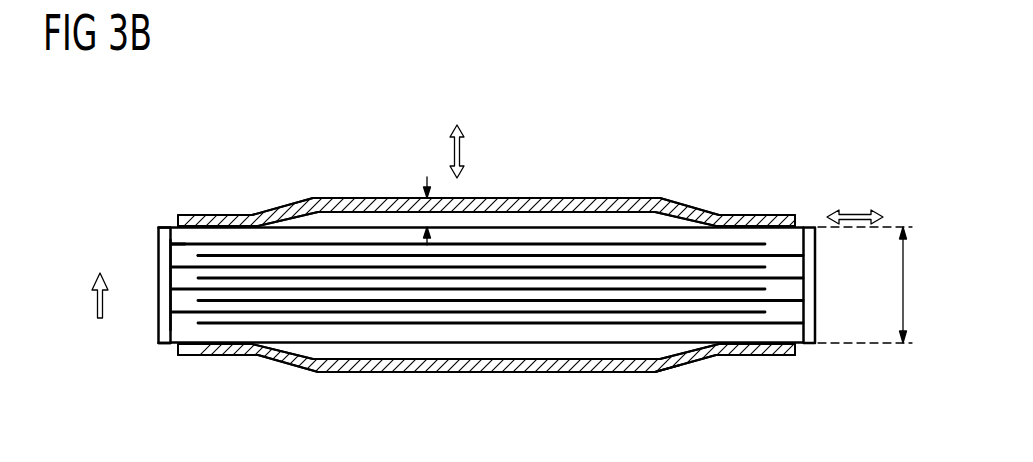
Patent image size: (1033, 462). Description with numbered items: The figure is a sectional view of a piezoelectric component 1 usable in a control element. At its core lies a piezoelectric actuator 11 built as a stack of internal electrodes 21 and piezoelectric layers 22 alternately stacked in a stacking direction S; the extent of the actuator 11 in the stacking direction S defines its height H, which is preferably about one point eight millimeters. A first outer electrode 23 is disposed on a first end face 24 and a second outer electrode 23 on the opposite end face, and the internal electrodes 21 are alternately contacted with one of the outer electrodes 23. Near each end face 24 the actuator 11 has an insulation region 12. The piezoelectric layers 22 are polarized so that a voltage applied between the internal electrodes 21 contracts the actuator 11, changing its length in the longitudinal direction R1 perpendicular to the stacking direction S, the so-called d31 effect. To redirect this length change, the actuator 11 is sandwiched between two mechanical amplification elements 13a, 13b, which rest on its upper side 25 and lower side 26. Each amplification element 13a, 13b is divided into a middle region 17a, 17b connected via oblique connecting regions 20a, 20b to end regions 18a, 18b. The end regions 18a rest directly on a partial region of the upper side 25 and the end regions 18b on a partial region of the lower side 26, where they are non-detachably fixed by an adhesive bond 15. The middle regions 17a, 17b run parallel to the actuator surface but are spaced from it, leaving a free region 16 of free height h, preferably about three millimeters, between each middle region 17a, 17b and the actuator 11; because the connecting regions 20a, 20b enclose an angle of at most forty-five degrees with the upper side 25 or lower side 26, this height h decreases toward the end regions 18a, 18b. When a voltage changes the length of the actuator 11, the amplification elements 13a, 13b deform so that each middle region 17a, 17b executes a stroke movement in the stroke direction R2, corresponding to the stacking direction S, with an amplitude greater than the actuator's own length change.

The piezoelectric component 1 is at (785, 97).
The piezoelectric actuator 11 is at (572, 227).
The insulation region 12 is at (800, 228).
The first amplification element 13a is at (502, 188).
The second amplification element 13b is at (475, 384).
The adhesive bond 15 is at (230, 356).
The free region 16 is at (662, 373).
The middle region of first amplification element 17a is at (610, 197).
The middle region of second amplification element 17b is at (610, 373).
The end region of first amplification element 18a is at (230, 215).
The end region of second amplification element 18b is at (203, 356).
The connecting region of first amplification element 20a is at (287, 205).
The connecting region of second amplification element 20b is at (280, 364).
The internal electrode 21 is at (227, 253).
The piezoelectric layer 22 is at (795, 259).
The outer electrode 23 is at (807, 290).
The end face 24 is at (161, 298).
The upper side 25 is at (163, 225).
The lower side 26 is at (158, 346).
The free height h is at (423, 220).
The height of the piezoelectric actuator H is at (905, 290).
The longitudinal direction R1 is at (855, 213).
The stroke direction R2 is at (452, 152).
The stacking direction S is at (93, 302).